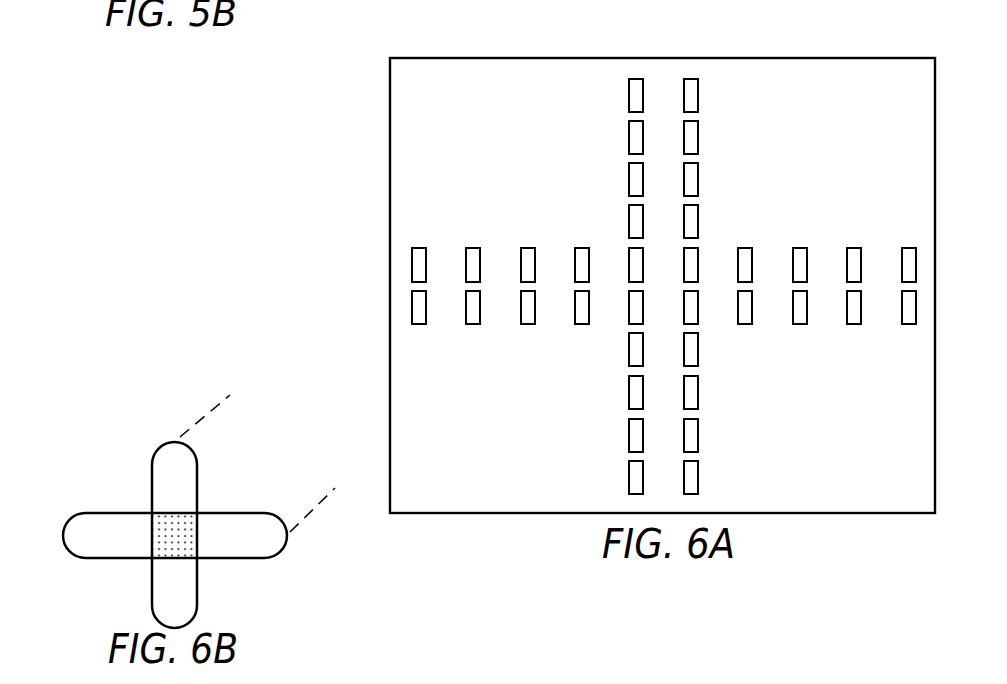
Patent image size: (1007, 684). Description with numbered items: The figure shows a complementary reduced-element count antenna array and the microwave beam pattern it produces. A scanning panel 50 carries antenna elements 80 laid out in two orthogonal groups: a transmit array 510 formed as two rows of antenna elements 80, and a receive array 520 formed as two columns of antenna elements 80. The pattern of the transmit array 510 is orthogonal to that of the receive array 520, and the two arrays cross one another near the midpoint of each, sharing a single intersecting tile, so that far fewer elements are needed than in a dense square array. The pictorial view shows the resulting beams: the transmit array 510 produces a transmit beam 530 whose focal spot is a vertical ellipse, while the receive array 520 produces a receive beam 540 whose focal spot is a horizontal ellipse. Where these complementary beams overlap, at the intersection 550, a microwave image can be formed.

In FIG. 6A, the scanning panel 50 is at (386, 190).
In FIG. 6A, the antenna elements 80 is at (853, 248).
In FIG. 6A, the transmit array 510 is at (383, 244).
In FIG. 6A, the receive array 520 is at (702, 50).
In FIG. 6B, the transmit beam 530 is at (152, 492).
In FIG. 6B, the receive beam 540 is at (252, 560).
In FIG. 6B, the intersection 550 is at (152, 542).